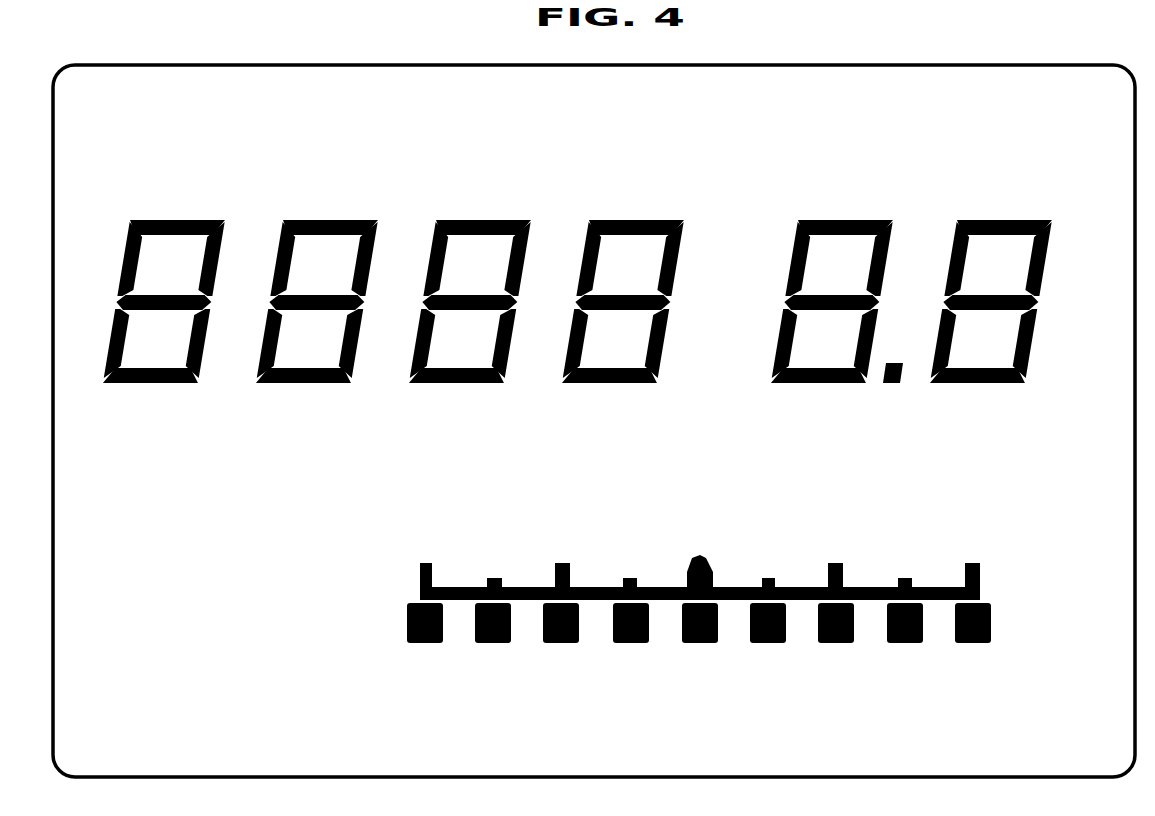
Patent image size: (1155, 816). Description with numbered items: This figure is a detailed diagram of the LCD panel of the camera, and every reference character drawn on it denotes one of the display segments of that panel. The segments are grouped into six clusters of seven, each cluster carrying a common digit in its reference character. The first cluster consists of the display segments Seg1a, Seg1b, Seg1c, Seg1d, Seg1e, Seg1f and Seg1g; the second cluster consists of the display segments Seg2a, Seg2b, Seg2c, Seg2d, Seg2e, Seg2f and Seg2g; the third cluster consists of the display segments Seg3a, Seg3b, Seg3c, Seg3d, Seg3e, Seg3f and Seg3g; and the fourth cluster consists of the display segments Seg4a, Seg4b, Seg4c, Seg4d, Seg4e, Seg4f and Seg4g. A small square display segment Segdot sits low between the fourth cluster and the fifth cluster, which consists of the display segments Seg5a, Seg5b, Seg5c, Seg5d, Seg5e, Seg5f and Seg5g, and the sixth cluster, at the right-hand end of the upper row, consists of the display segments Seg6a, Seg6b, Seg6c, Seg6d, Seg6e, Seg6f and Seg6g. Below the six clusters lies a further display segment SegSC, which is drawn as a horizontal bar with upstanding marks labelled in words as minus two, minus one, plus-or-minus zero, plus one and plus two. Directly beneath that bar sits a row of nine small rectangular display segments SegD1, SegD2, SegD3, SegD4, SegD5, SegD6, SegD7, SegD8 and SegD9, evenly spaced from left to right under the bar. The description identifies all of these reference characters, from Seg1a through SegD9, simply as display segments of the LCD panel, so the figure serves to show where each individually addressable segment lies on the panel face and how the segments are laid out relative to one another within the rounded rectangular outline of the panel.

The display segment Seg1a is at (195, 368).
The display segment Seg1b is at (104, 237).
The display segment Seg1c is at (99, 370).
The display segment Seg1d is at (136, 432).
The display segment Seg1e is at (210, 392).
The display segment Seg1f is at (212, 202).
The display segment Seg1g is at (163, 186).
The display segment Seg2a is at (333, 210).
The display segment Seg2b is at (270, 237).
The display segment Seg2c is at (263, 359).
The display segment Seg2d is at (314, 422).
The display segment Seg2e is at (370, 376).
The display segment Seg2f is at (397, 188).
The display segment Seg2g is at (321, 186).
The display segment Seg3a is at (491, 212).
The display segment Seg3b is at (437, 238).
The display segment Seg3c is at (413, 360).
The display segment Seg3d is at (465, 421).
The display segment Seg3e is at (525, 375).
The display segment Seg3f is at (549, 188).
The display segment Seg3g is at (482, 191).
The display segment Seg4a is at (641, 213).
The display segment Seg4b is at (594, 238).
The display segment Seg4c is at (564, 360).
The display segment Seg4d is at (616, 422).
The display segment Seg4e is at (674, 376).
The display segment Seg4f is at (699, 189).
The display segment Seg4g is at (635, 191).
The display segment Seg5a is at (837, 215).
The display segment Seg5b is at (766, 239).
The display segment Seg5c is at (746, 362).
The display segment Seg5d is at (815, 424).
The display segment Seg5e is at (854, 378).
The display segment Seg5f is at (899, 190).
The display segment Seg5g is at (828, 193).
The display segment Seg6a is at (1004, 213).
The display segment Seg6b is at (950, 238).
The display segment Seg6c is at (972, 396).
The display segment Seg6d is at (987, 410).
The display segment Seg6e is at (1035, 363).
The display segment Seg6f is at (1065, 189).
The display segment Seg6g is at (997, 192).
The display segment Segdot is at (898, 436).
The display segment SegSC is at (407, 477).
The display segment SegD1 is at (425, 647).
The display segment SegD2 is at (491, 663).
The display segment SegD3 is at (563, 647).
The display segment SegD4 is at (630, 663).
The display segment SegD5 is at (698, 647).
The display segment SegD6 is at (770, 663).
The display segment SegD7 is at (836, 645).
The display segment SegD8 is at (906, 663).
The display segment SegD9 is at (975, 647).